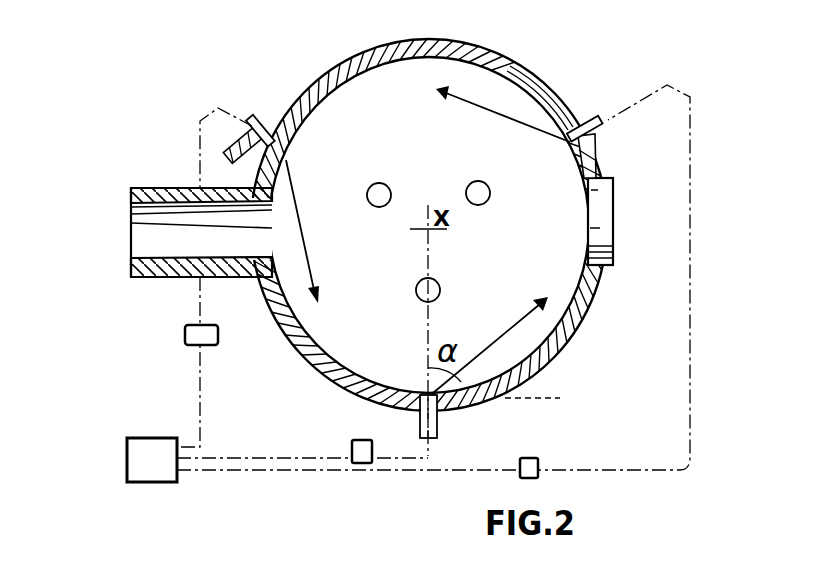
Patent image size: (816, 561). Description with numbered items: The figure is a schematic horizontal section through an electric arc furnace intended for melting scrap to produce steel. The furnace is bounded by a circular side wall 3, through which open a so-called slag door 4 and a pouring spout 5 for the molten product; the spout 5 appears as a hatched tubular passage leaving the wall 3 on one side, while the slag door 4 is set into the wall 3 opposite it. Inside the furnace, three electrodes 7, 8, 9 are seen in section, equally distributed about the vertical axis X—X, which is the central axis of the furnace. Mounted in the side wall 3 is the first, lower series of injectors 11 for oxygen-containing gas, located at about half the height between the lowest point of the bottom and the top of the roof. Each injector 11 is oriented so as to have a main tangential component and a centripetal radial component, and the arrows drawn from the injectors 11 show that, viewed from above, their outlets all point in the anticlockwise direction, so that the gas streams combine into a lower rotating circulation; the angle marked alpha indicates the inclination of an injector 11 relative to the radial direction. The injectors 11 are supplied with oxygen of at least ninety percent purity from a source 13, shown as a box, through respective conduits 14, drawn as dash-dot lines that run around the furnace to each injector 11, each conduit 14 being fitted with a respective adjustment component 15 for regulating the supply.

The side wall 3 is at (513, 63).
The slag door 4 is at (616, 200).
The pouring spout 5 is at (148, 280).
The electrode 7 is at (388, 184).
The electrode 8 is at (490, 182).
The electrode 9 is at (420, 284).
The first series of injectors 11 is at (270, 122).
The source 13 is at (150, 440).
The conduit 14 is at (200, 380).
The adjustment component 15 is at (185, 335).